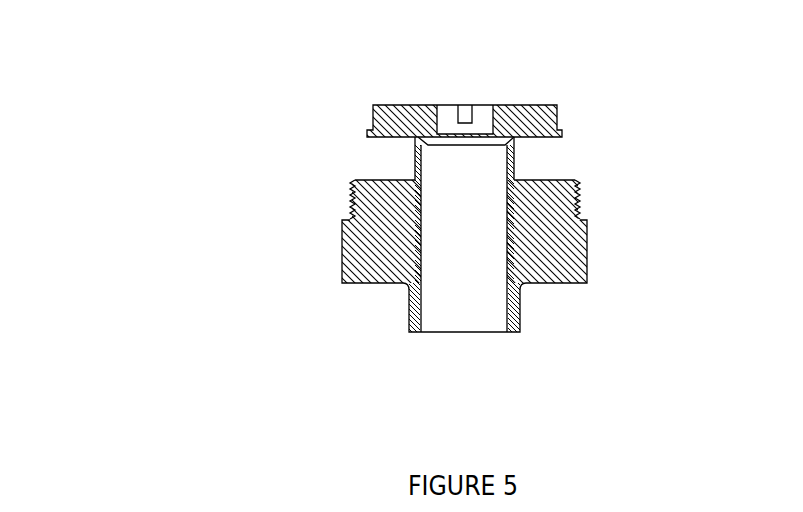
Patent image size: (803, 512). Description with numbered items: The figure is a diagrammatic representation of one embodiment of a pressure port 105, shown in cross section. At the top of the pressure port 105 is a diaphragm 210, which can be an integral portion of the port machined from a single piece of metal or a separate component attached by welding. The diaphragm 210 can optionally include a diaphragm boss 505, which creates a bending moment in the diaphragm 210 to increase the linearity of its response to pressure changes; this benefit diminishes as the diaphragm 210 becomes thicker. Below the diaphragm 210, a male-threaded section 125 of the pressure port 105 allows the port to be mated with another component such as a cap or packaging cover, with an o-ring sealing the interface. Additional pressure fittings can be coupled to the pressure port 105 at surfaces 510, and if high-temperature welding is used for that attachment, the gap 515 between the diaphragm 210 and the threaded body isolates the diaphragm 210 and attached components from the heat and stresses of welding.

The pressure port 105 is at (238, 76).
The diaphragm 210 is at (387, 100).
The diaphragm boss 505 is at (468, 113).
The gap 515 is at (352, 125).
The male-threaded section 125 is at (580, 180).
The surfaces 510 is at (378, 285).